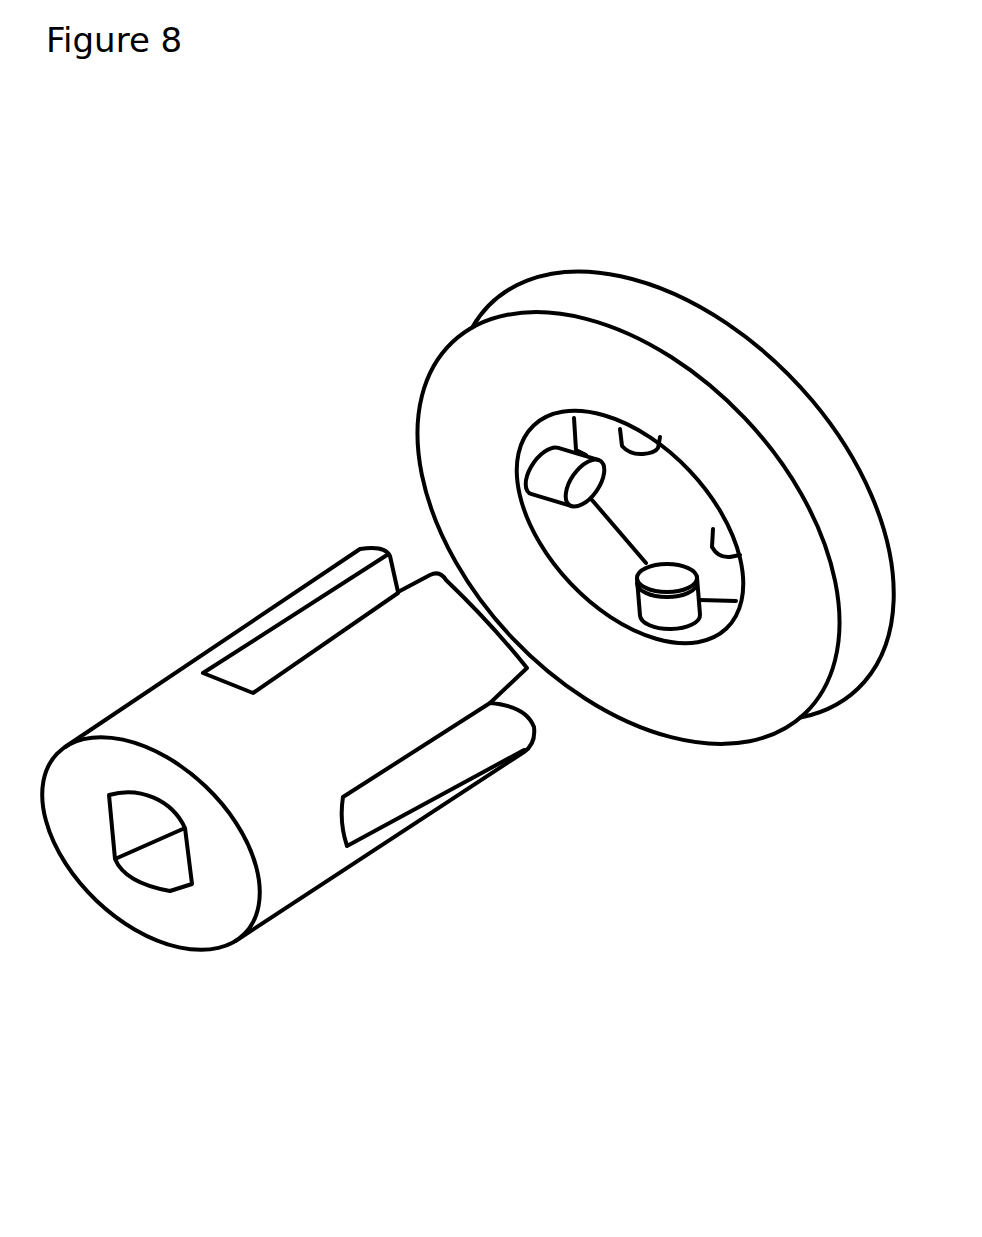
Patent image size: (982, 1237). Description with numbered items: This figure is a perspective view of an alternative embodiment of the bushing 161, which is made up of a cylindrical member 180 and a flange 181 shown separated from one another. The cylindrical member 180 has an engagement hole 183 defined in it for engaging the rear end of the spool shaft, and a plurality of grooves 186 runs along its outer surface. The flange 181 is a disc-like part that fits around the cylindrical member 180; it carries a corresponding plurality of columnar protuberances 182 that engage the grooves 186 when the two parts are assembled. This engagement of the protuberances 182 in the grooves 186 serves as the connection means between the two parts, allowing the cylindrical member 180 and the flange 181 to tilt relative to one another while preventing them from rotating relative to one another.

The bushing 161 is at (268, 544).
The cylindrical member 180 is at (301, 877).
The flange 181 is at (802, 727).
The columnar protuberances 182 is at (552, 470).
The engagement hole 183 is at (167, 869).
The grooves 186 is at (490, 730).